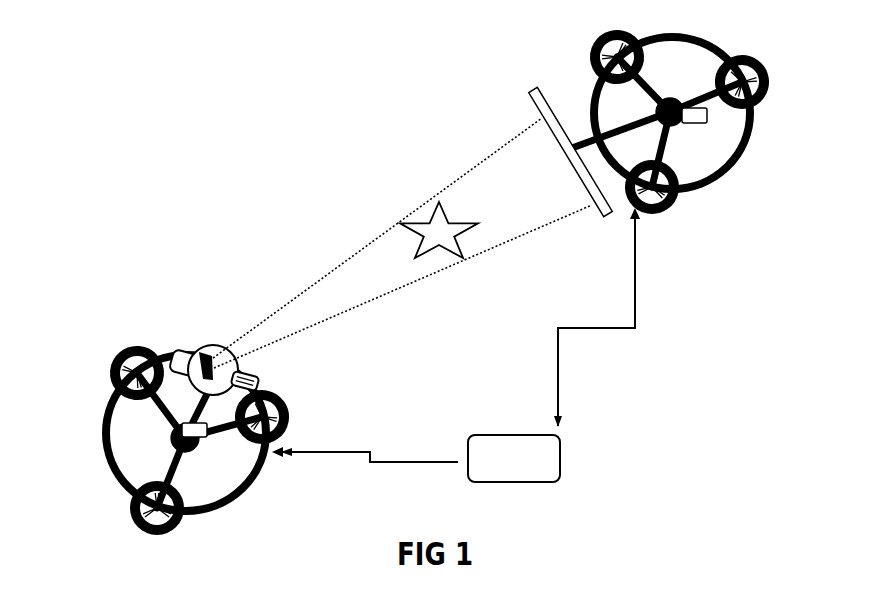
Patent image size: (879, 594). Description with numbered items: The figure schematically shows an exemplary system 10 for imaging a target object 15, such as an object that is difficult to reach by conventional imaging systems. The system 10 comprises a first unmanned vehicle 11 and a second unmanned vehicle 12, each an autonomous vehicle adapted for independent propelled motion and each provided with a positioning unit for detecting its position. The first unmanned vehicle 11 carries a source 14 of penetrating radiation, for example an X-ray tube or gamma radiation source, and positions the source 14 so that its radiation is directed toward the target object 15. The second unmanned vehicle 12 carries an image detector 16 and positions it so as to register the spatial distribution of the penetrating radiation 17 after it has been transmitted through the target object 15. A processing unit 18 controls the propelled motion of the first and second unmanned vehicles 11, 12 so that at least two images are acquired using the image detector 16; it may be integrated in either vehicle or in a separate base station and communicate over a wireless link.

The system 10 is at (118, 107).
The first unmanned vehicle 11 is at (133, 332).
The second unmanned vehicle 12 is at (580, 75).
The source of penetrating radiation 14 is at (209, 345).
The target object 15 is at (398, 222).
The image detector 16 is at (607, 217).
The penetrating radiation 17 is at (282, 308).
The processing unit 18 is at (560, 462).